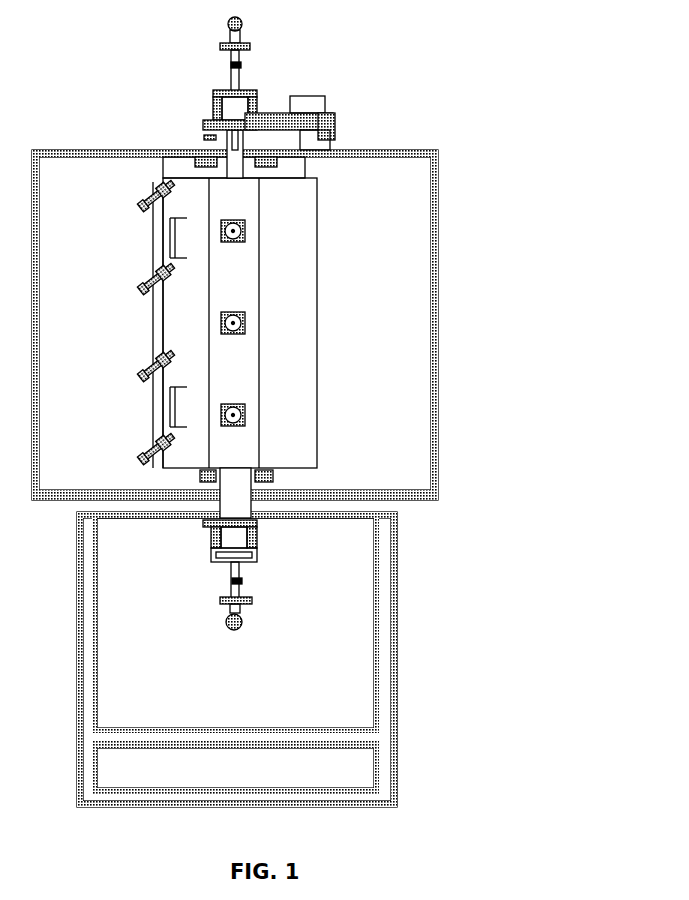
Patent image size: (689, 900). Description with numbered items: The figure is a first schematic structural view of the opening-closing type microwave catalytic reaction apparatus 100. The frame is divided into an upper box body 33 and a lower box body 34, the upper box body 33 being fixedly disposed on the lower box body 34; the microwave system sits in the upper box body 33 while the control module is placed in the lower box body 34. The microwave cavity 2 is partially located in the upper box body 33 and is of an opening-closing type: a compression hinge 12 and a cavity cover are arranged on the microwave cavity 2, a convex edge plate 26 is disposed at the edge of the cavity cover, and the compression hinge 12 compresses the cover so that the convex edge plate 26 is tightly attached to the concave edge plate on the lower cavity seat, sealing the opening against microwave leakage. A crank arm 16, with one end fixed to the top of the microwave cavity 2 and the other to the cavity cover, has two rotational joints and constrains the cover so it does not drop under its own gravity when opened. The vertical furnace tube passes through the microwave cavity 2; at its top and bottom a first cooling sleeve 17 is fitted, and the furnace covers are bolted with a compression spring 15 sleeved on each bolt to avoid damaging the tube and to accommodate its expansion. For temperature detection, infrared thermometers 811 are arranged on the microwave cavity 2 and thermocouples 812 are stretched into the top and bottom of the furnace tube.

The opening-closing type microwave catalytic reaction apparatus 100 is at (462, 96).
The microwave cavity 2 is at (282, 292).
The compression hinge 12 is at (155, 278).
The compression spring 15 is at (213, 109).
The crank arm 16 is at (275, 122).
The first cooling sleeve 17 is at (237, 503).
The convex edge plate 26 is at (160, 330).
The upper box body 33 is at (445, 297).
The lower box body 34 is at (383, 607).
The infrared thermometer 811 is at (240, 416).
The thermocouple 812 is at (227, 617).